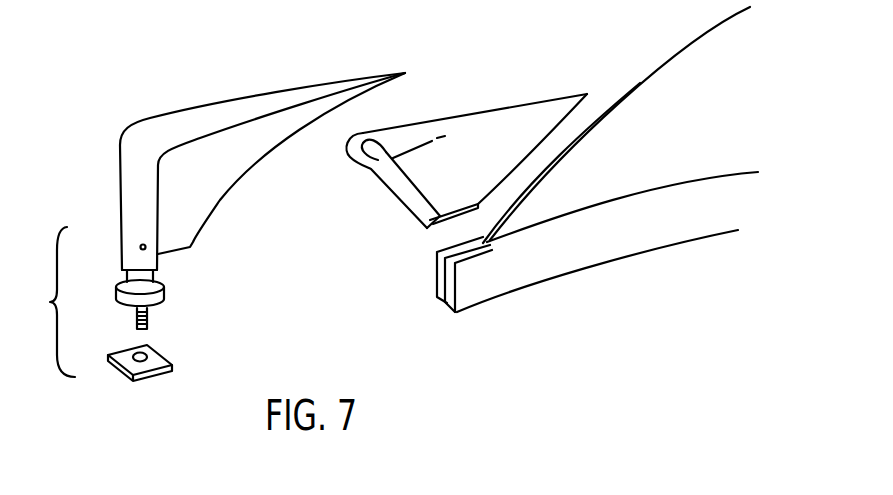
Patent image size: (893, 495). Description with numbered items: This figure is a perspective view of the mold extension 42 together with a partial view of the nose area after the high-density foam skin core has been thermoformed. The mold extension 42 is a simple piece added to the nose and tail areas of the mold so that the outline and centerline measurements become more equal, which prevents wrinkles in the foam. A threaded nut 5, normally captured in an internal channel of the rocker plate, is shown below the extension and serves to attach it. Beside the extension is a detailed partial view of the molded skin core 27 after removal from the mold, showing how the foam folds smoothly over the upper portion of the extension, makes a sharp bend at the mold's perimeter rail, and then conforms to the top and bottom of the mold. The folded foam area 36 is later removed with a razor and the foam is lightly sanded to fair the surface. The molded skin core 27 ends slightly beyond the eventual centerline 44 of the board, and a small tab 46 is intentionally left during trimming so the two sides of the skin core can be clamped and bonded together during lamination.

The mold extension 42 is at (119, 174).
The threaded nut 5 is at (150, 348).
The folded foam area 36 is at (382, 178).
The molded skin core 27 is at (647, 72).
The centerline 44 is at (634, 195).
The tab 46 is at (437, 282).